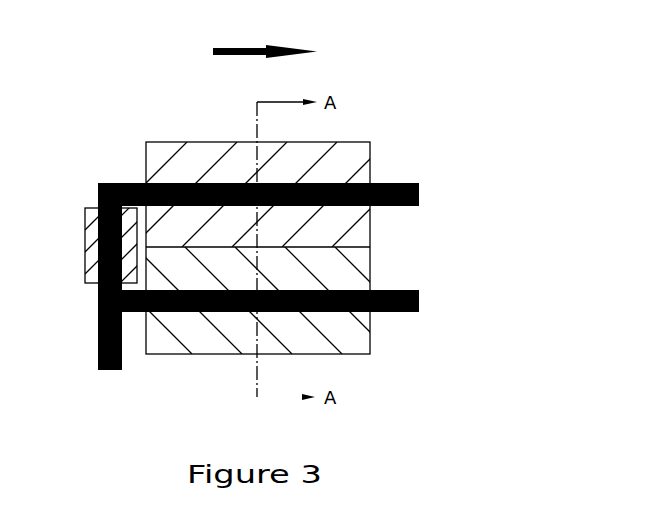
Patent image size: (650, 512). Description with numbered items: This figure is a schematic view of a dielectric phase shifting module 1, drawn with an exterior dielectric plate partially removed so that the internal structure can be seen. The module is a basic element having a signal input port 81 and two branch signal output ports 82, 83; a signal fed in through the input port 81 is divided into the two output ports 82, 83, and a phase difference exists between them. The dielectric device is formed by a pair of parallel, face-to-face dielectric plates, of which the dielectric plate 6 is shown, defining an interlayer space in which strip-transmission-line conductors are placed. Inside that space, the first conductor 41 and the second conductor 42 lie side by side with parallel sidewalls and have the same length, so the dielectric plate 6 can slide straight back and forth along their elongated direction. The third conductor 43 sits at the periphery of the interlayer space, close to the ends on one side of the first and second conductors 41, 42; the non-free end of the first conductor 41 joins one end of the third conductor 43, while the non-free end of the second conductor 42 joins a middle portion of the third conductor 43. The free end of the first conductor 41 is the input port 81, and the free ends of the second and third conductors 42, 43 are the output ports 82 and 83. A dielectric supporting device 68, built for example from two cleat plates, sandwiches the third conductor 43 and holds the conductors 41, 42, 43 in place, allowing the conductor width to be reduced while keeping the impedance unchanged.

The dielectric phase shifting module 1 is at (497, 129).
The dielectric plate 6 is at (208, 158).
The first conductor 41 is at (322, 183).
The second conductor 42 is at (320, 313).
The third conductor 43 is at (100, 244).
The dielectric supporting device 68 is at (85, 209).
The signal input port 81 is at (419, 194).
The signal output port 82 is at (419, 300).
The signal output port 83 is at (114, 370).